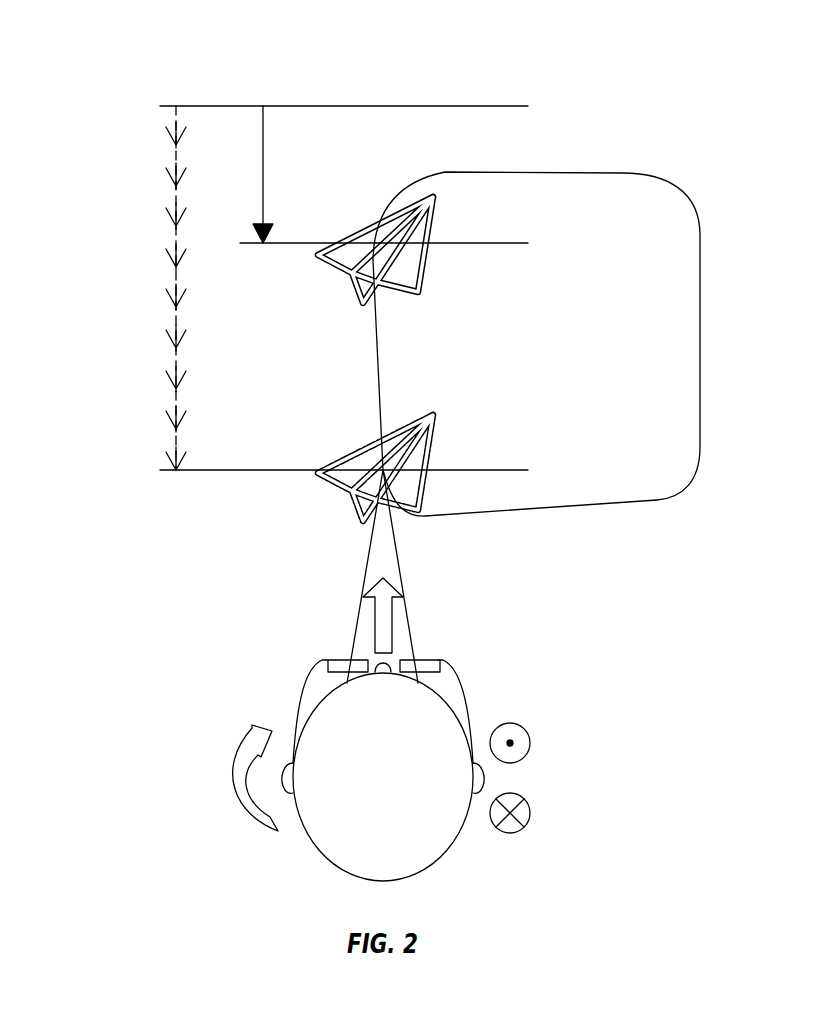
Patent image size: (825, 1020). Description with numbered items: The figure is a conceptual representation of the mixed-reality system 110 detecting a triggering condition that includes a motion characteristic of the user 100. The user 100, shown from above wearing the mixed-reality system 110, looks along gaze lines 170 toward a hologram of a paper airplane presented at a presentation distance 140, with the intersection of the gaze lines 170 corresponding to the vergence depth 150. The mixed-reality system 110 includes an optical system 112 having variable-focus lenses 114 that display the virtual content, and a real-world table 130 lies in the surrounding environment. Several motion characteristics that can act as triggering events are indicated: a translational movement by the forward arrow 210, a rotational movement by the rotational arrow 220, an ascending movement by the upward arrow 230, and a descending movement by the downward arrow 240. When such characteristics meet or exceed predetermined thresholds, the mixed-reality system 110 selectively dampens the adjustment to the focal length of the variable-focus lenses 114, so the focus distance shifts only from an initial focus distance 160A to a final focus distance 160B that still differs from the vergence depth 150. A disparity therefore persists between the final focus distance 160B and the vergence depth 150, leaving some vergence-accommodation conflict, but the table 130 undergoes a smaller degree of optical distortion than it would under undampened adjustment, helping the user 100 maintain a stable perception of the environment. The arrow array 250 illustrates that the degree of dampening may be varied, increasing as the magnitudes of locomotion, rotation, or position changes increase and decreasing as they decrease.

The user 100 is at (455, 843).
The mixed-reality system 110 is at (360, 693).
The optical system 112 is at (337, 650).
The variable-focus lenses 114 is at (350, 660).
The table 130 is at (552, 172).
The presentation distance 140 is at (344, 504).
The vergence depth 150 is at (247, 472).
The initial focus distance 160A is at (480, 106).
The final focus distance 160B is at (278, 245).
The gaze lines 170 is at (368, 558).
The forward arrow 210 is at (373, 610).
The rotational arrow 220 is at (246, 815).
The upward arrow 230 is at (531, 743).
The downward arrow 240 is at (531, 813).
The arrow array 250 is at (177, 292).